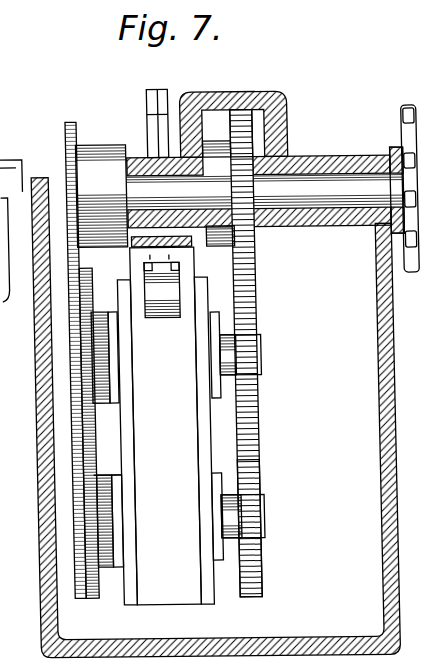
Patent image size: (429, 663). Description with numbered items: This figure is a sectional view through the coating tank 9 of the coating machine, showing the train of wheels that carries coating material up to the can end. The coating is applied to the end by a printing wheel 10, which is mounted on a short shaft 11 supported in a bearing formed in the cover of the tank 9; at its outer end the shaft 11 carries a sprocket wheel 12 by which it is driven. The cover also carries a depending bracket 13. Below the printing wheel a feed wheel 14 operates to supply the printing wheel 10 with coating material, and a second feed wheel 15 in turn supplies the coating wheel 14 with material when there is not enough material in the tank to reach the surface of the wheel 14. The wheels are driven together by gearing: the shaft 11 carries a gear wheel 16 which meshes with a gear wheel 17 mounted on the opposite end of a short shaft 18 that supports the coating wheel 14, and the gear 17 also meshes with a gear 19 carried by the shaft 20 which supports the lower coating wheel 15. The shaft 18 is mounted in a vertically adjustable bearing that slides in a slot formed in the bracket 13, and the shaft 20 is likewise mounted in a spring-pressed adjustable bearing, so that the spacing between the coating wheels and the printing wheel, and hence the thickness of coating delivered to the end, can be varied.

The coating tank 9 is at (385, 395).
The printing wheel 10 is at (84, 129).
The short shaft 11 is at (315, 191).
The sprocket wheel 12 is at (413, 135).
The depending bracket 13 is at (165, 420).
The feed wheel 14 is at (83, 367).
The feed wheel 15 is at (83, 509).
The gear wheel 16 is at (249, 110).
The gear wheel 17 is at (260, 311).
The short shaft 18 is at (261, 356).
The gear 19 is at (261, 481).
The shaft 20 is at (228, 538).